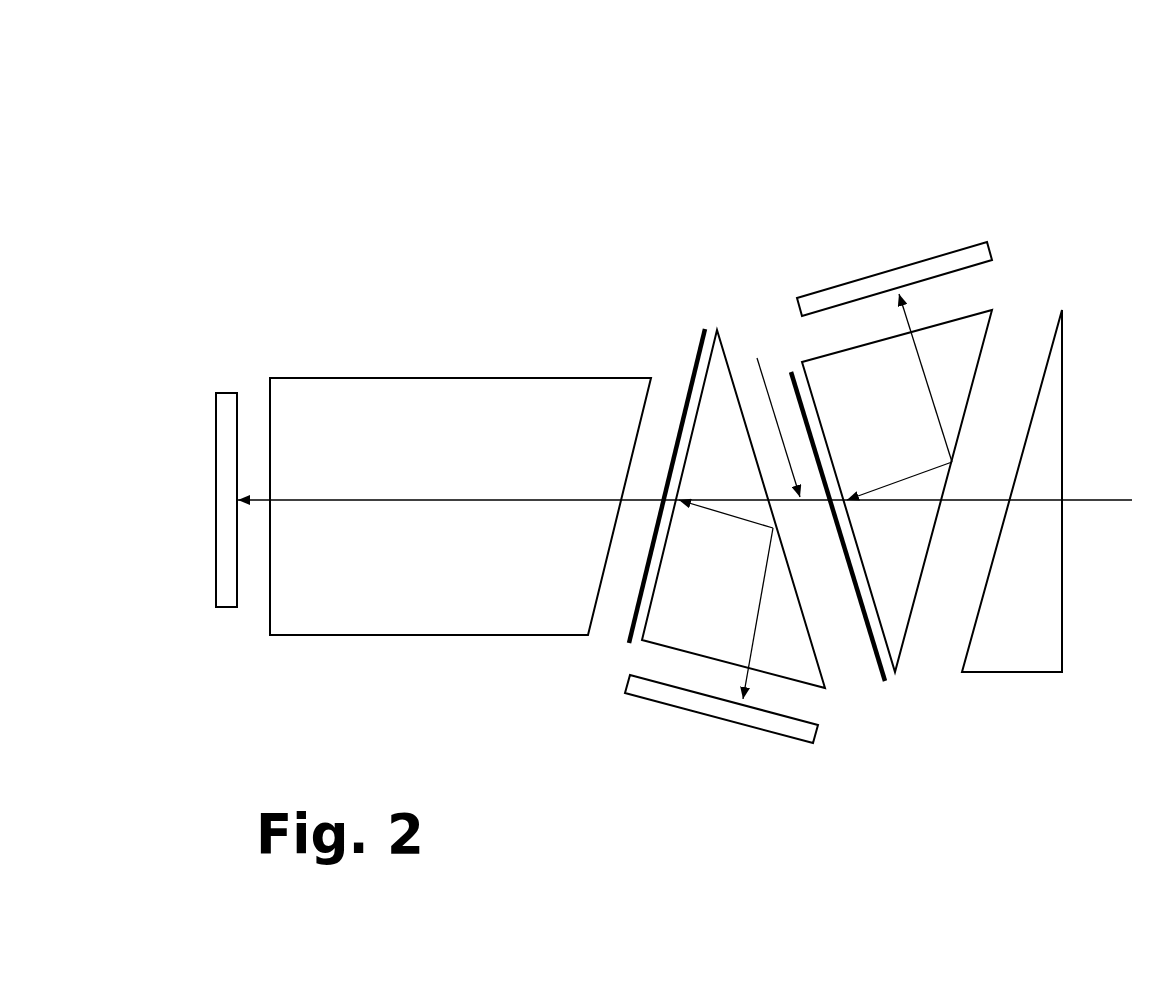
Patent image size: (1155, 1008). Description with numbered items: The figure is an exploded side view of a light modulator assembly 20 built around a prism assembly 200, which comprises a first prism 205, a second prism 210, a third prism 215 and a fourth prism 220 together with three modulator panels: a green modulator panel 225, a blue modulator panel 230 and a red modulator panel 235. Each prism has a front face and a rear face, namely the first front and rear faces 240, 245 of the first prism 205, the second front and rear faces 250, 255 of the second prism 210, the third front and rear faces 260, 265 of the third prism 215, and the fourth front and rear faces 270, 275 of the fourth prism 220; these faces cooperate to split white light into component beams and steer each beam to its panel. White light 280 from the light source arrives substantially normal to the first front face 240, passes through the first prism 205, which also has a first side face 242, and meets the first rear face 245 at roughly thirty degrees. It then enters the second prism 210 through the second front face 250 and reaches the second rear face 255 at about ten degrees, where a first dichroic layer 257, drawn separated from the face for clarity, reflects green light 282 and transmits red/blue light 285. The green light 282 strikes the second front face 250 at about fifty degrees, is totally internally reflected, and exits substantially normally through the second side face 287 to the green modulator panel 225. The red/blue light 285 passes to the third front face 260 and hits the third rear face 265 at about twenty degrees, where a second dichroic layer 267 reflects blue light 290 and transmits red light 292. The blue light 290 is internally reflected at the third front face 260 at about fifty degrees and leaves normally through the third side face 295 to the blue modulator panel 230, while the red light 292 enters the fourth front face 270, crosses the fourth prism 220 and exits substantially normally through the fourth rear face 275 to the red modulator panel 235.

The prism assembly 200 is at (567, 72).
The light modulator assembly 20 is at (616, 274).
The first prism 205 is at (1002, 656).
The second prism 210 is at (845, 411).
The third prism 215 is at (688, 616).
The fourth prism 220 is at (437, 571).
The green modulator panel 225 is at (858, 283).
The blue modulator panel 230 is at (733, 727).
The red modulator panel 235 is at (225, 392).
The first front face 240 is at (1068, 607).
The first side face 242 is at (1020, 677).
The first rear face 245 is at (1032, 397).
The second front face 250 is at (984, 358).
The second rear face 255 is at (868, 567).
The first dichroic layer 257 is at (885, 683).
The third front face 260 is at (818, 646).
The third rear face 265 is at (701, 416).
The second dichroic layer 267 is at (704, 328).
The fourth front face 270 is at (598, 585).
The fourth rear face 275 is at (267, 572).
The white light 280 is at (1098, 500).
The green light 282 is at (897, 319).
The red/blue light 285 is at (767, 417).
The second side face 287 is at (967, 312).
The blue light 290 is at (749, 682).
The red light 292 is at (637, 504).
The third side face 295 is at (657, 651).